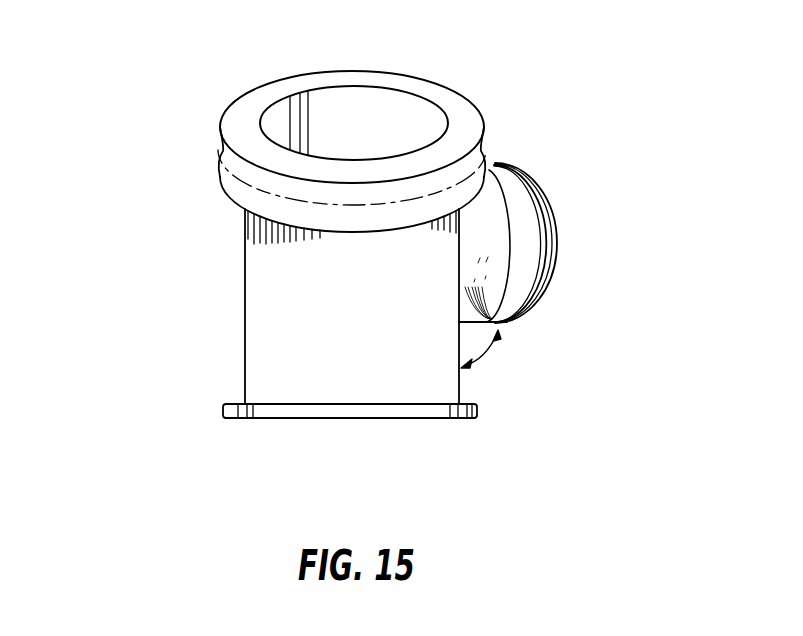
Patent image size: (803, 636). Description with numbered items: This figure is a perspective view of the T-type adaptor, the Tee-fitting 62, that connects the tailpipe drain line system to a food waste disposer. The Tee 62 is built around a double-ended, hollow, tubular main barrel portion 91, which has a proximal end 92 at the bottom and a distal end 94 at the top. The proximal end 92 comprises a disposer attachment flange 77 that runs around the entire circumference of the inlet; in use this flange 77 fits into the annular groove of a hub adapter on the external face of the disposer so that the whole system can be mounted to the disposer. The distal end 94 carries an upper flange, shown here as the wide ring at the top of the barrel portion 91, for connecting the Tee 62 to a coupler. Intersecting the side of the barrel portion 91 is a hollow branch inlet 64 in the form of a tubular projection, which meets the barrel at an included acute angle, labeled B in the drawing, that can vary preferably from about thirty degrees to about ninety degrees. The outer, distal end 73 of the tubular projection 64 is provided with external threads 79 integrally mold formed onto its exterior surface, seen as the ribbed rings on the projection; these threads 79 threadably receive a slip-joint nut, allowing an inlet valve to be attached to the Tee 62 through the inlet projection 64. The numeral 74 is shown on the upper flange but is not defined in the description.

The Tee-fitting 62 is at (149, 186).
The distal end 94 is at (330, 71).
The top flange 74 is at (461, 105).
The distal end of tubular projection 73 is at (516, 170).
The branch inlet 64 is at (508, 227).
The external threads 79 is at (520, 317).
The main barrel portion 91 is at (263, 312).
The proximal end 92 is at (303, 420).
The disposer attachment flange 77 is at (388, 418).